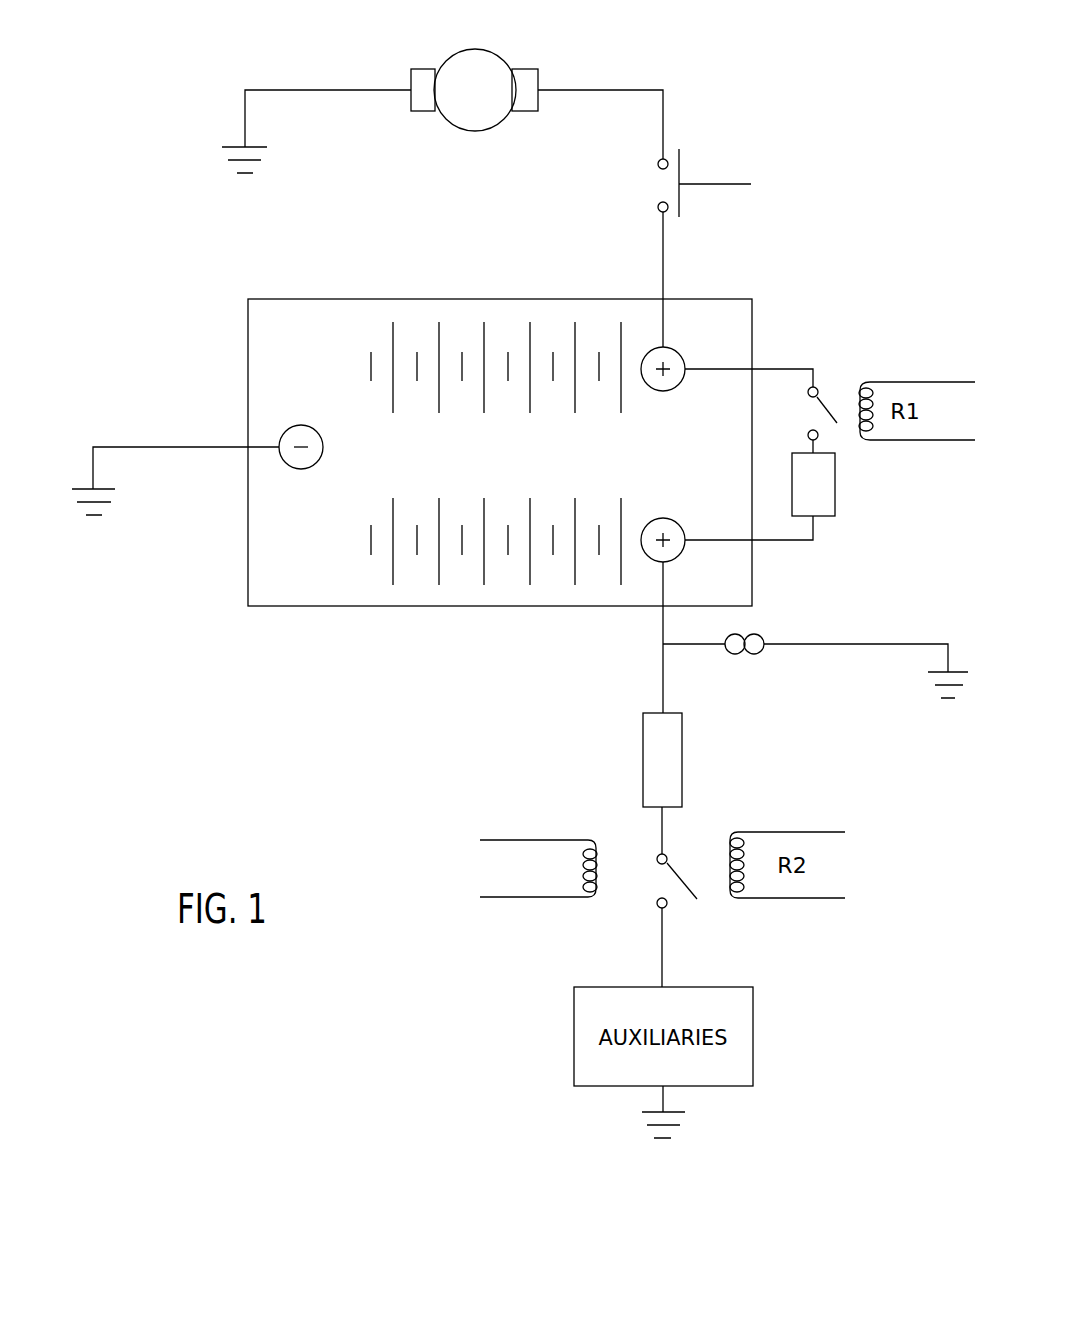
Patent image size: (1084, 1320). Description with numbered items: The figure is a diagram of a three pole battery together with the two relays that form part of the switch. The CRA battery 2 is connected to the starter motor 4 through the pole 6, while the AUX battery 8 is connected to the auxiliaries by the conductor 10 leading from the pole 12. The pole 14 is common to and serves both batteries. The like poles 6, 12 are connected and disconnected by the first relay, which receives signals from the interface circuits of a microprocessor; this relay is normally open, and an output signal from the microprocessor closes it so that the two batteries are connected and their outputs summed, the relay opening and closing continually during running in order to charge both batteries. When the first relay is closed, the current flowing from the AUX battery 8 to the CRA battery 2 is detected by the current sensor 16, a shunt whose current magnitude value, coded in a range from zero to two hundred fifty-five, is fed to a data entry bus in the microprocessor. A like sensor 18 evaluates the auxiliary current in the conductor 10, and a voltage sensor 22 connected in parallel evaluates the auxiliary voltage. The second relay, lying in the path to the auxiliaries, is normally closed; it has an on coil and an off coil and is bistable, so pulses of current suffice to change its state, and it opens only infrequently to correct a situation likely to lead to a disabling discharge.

The CRA battery 2 is at (258, 323).
The starter motor 4 is at (530, 69).
The pole 6 is at (682, 355).
The AUX battery 8 is at (248, 575).
The conductor 10 is at (660, 624).
The pole 12 is at (668, 518).
The pole 14 is at (296, 425).
The current sensor 16 is at (835, 508).
The sensor 18 is at (682, 760).
The voltage sensor 22 is at (757, 653).